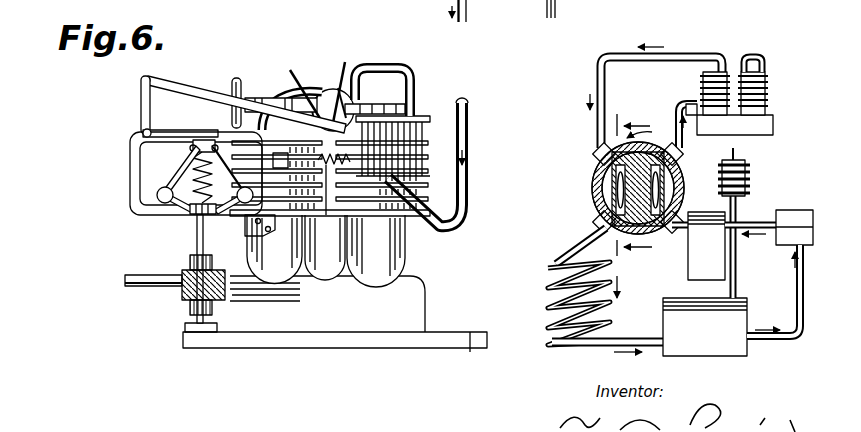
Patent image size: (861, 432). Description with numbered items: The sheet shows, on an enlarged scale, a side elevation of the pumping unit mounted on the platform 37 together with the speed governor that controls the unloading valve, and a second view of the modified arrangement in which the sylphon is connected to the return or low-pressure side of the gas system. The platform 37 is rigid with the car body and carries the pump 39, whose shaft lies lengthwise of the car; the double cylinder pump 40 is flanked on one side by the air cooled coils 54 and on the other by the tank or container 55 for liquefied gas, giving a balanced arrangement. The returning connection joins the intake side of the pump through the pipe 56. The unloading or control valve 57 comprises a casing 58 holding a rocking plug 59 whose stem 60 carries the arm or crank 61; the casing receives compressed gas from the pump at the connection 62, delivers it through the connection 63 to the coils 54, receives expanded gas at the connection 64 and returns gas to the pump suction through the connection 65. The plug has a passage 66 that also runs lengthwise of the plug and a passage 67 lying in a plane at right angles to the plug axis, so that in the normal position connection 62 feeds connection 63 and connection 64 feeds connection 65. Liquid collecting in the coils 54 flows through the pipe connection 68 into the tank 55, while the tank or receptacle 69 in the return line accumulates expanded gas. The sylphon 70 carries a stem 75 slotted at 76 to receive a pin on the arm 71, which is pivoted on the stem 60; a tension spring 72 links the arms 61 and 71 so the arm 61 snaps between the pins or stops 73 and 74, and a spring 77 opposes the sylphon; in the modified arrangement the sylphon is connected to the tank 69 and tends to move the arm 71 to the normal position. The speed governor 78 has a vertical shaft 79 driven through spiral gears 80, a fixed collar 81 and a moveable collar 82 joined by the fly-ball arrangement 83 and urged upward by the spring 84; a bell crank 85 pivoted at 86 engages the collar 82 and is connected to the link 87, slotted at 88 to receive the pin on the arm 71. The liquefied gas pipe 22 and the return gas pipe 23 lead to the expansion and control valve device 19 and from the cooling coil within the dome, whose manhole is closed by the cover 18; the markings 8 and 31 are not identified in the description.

In FIG. 9, the fluid flow direction indicator 8 is at (632, 198).
In FIG. 9, the cover 18 is at (794, 227).
In FIG. 9, the expansion and control valve device 19 is at (794, 236).
In FIG. 6, the liquefied gas tube or pipe 22 is at (466, 22).
In FIG. 9, the liquefied gas tube or pipe 22 is at (800, 290).
In FIG. 6, the return or expanded gas tube or pipe 23 is at (555, 14).
In FIG. 9, the return or expanded gas tube or pipe 23 is at (750, 225).
In FIG. 6, the base plate 31 is at (335, 351).
In FIG. 6, the platform 37 is at (474, 13).
In FIG. 6, the pump 39 is at (228, 6).
In FIG. 9, the pump 39 is at (770, 88).
In FIG. 6, the double cylinder pump 40 is at (166, 282).
In FIG. 9, the air cooled coils 54 is at (548, 298).
In FIG. 9, the tank or container for liquefied gas 55 is at (705, 327).
In FIG. 6, the pipe 56 is at (466, 182).
In FIG. 9, the pipe 56 is at (679, 112).
In FIG. 6, the unloading or control valve 57 is at (332, 90).
In FIG. 9, the unloading or control valve 57 is at (590, 201).
In FIG. 9, the casing 58 is at (596, 192).
In FIG. 9, the rocking plug 59 is at (604, 214).
In FIG. 6, the stem 60 is at (288, 96).
In FIG. 6, the arm or crank 61 is at (320, 98).
In FIG. 9, the connection for compressed gas 62 is at (598, 162).
In FIG. 9, the connection 63 is at (605, 230).
In FIG. 9, the connection 64 is at (664, 234).
In FIG. 9, the connection 65 is at (674, 164).
In FIG. 9, the passage 66 is at (612, 178).
In FIG. 9, the passage 67 is at (678, 192).
In FIG. 6, the pipe connection 68 is at (232, 0).
In FIG. 9, the pipe connection 68 is at (622, 338).
In FIG. 9, the tank or receptacle 69 is at (698, 246).
In FIG. 6, the sylphon 70 is at (360, 150).
In FIG. 9, the sylphon 70 is at (750, 178).
In FIG. 6, the arm or crank 71 is at (232, 92).
In FIG. 6, the tension spring 72 is at (386, 74).
In FIG. 6, the pin or stop 73 is at (292, 90).
In FIG. 6, the pin or stop 74 is at (346, 100).
In FIG. 6, the stem 75 is at (372, 208).
In FIG. 9, the stem 75 is at (735, 158).
In FIG. 6, the slot 76 is at (326, 200).
In FIG. 6, the spring 77 is at (282, 226).
In FIG. 6, the speed governor 78 is at (177, 208).
In FIG. 6, the vertical shaft 79 is at (196, 240).
In FIG. 6, the spiral gears 80 is at (190, 298).
In FIG. 6, the fixed collar 81 is at (190, 212).
In FIG. 6, the vertically moveable collar 82 is at (194, 146).
In FIG. 6, the fly-ball arrangement 83 is at (158, 194).
In FIG. 6, the spring 84 is at (198, 172).
In FIG. 6, the bell crank 85 is at (136, 95).
In FIG. 6, the pivot point 86 is at (140, 133).
In FIG. 6, the link 87 is at (164, 88).
In FIG. 6, the slot 88 is at (232, 128).